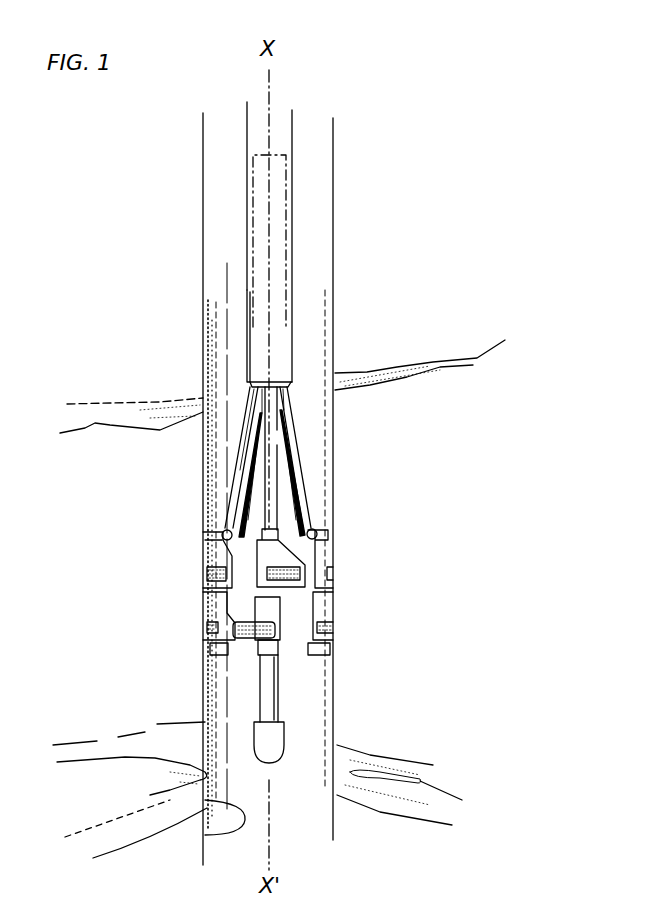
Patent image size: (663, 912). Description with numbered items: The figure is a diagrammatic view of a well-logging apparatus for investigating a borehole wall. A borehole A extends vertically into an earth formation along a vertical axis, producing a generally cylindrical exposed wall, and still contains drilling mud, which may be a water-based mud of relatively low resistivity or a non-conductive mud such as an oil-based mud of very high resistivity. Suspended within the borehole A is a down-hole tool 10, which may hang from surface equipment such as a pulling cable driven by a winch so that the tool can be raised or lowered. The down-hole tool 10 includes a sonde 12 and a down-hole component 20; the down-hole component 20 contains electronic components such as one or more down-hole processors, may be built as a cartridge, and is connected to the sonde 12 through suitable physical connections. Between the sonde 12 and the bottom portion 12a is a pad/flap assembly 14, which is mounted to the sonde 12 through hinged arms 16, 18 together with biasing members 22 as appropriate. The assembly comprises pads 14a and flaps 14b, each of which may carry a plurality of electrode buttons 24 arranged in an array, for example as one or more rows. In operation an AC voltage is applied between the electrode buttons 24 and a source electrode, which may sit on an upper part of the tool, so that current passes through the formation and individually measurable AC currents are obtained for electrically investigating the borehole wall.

The down-hole tool 10 is at (297, 313).
The down-hole component 20 is at (255, 197).
The sonde 12 is at (249, 342).
The bottom portion 12a is at (280, 708).
The pad/flap assembly 14 is at (109, 620).
The pads 14a is at (208, 562).
The flaps 14b is at (208, 612).
The hinged arms 16 is at (278, 483).
The hinged arms 18 is at (240, 663).
The biasing members 22 is at (263, 485).
The electrode buttons 24 is at (277, 600).
The borehole A is at (207, 803).